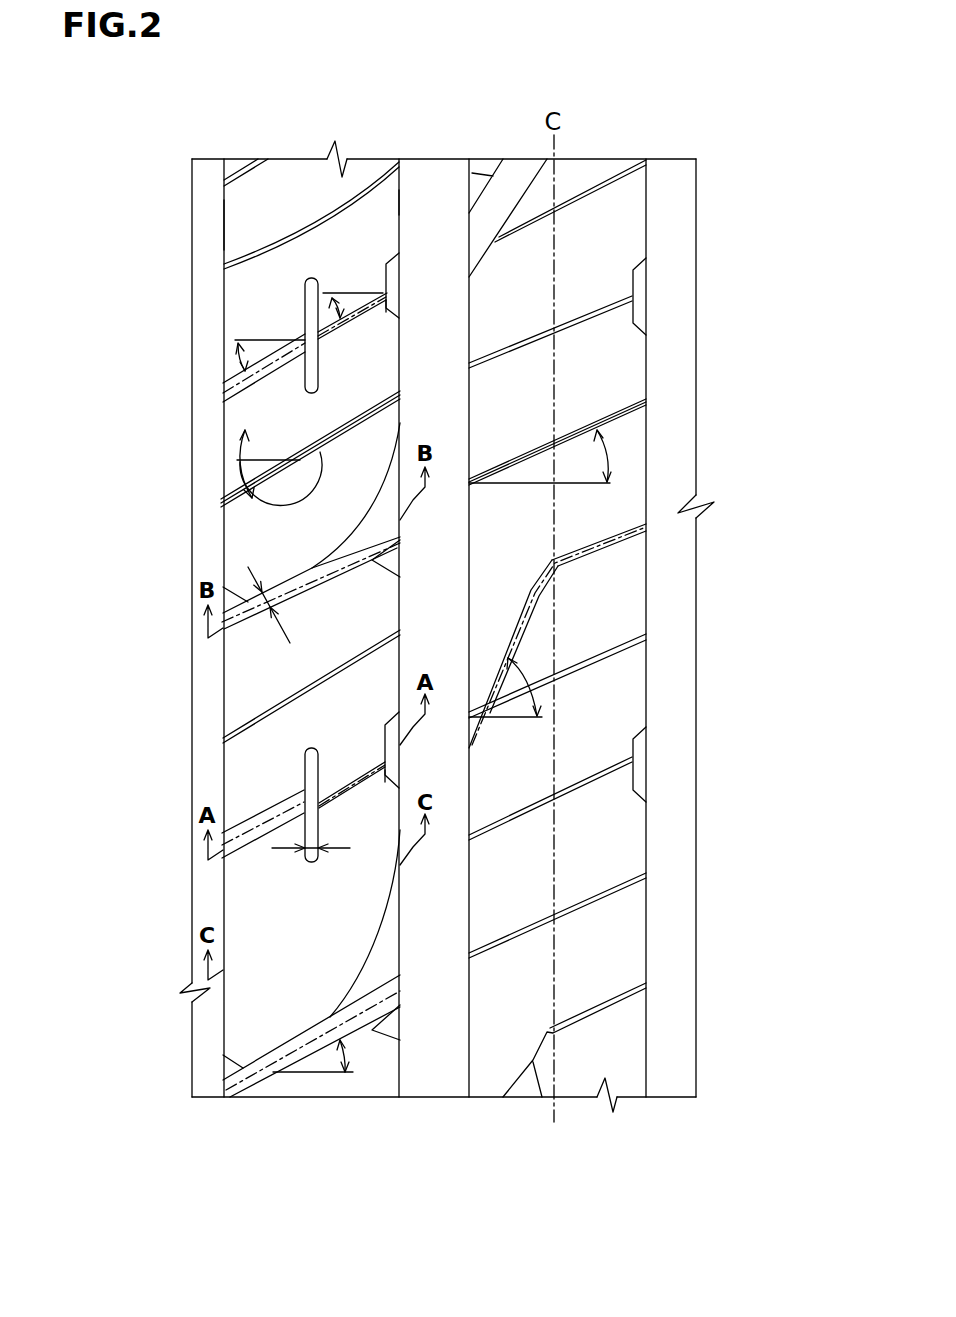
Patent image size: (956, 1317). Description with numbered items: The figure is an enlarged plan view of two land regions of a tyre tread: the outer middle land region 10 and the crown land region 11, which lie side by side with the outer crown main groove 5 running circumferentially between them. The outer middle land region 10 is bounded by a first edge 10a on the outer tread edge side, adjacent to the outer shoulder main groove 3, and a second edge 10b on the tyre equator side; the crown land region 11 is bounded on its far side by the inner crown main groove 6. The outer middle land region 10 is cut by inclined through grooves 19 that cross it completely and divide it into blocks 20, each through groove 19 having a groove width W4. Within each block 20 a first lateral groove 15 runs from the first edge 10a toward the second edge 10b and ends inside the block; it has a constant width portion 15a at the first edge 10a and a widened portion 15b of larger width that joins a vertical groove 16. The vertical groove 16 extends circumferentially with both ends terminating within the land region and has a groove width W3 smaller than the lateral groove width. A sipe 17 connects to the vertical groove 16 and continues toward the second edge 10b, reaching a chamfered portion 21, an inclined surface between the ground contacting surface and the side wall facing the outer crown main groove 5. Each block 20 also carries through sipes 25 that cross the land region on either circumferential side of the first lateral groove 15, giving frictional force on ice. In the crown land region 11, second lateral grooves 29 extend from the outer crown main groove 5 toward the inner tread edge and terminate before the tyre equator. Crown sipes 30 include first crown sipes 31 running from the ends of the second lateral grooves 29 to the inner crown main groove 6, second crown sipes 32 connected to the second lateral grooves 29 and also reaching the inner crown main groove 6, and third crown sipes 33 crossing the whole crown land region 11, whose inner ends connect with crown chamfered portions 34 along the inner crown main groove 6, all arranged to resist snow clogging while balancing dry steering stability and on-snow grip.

The outer shoulder main groove 3 is at (207, 185).
The inner crown main groove 6 is at (672, 195).
The outer crown main groove 5 is at (438, 223).
The outer middle land region 10 is at (300, 195).
The block 20 is at (310, 567).
The first edge 10a is at (224, 227).
The second edge 10b is at (400, 202).
The crown land region 11 is at (595, 230).
The first lateral groove 15 is at (300, 383).
The constant width portion 15a is at (264, 368).
The widened portion 15b is at (345, 322).
The vertical groove 16 is at (308, 390).
The sipe 17 is at (383, 305).
The through groove 19 is at (308, 580).
The chamfered portion 21 is at (393, 283).
The through sipe 25 is at (340, 543).
The second lateral groove 29 is at (527, 632).
The crown sipe 30 is at (618, 414).
The first crown sipe 31 is at (605, 545).
The second crown sipe 32 is at (590, 665).
The third crown sipe 33 is at (517, 817).
The crown chamfered portion 34 is at (634, 302).
The groove width of vertical groove W3 is at (304, 865).
The groove width of through groove W4 is at (288, 645).